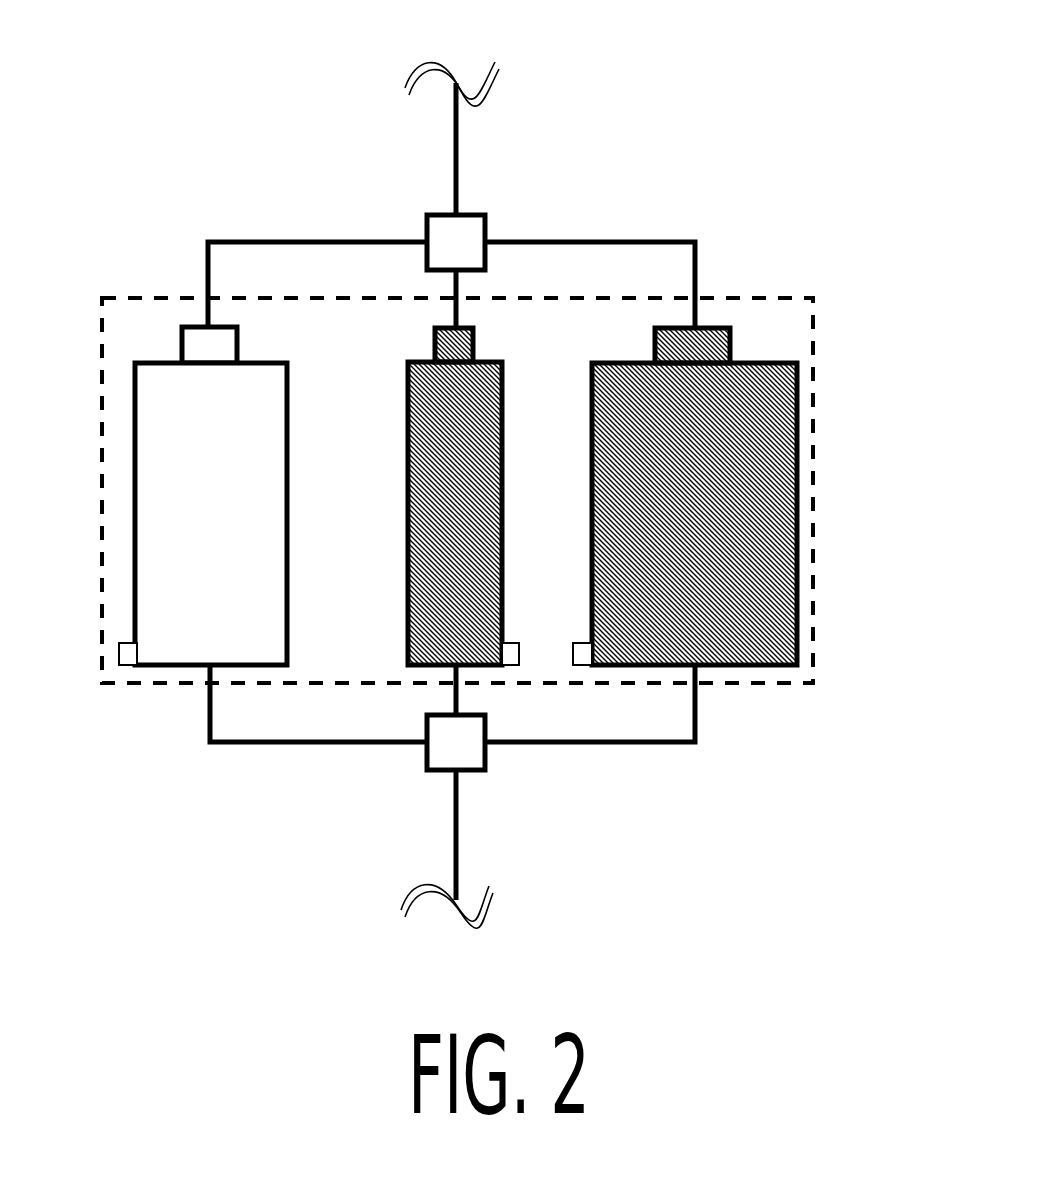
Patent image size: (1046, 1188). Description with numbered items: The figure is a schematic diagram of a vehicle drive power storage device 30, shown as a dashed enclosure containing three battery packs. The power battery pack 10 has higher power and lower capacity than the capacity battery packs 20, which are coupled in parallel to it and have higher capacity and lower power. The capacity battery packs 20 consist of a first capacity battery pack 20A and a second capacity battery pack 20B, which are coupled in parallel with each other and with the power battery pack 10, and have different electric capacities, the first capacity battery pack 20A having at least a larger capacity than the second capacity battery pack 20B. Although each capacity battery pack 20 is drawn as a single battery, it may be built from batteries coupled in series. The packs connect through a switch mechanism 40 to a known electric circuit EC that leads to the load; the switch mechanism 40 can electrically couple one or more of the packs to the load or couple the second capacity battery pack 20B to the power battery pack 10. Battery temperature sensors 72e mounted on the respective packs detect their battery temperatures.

The power battery pack 10 is at (157, 358).
The capacity battery packs 20 is at (627, 496).
The first capacity battery pack 20A is at (804, 516).
The second capacity battery pack 20B is at (405, 507).
The vehicle drive power storage device 30 is at (746, 292).
The switch mechanism 40 is at (478, 211).
The battery temperature sensors 72e is at (130, 667).
The electric circuit EC is at (450, 150).